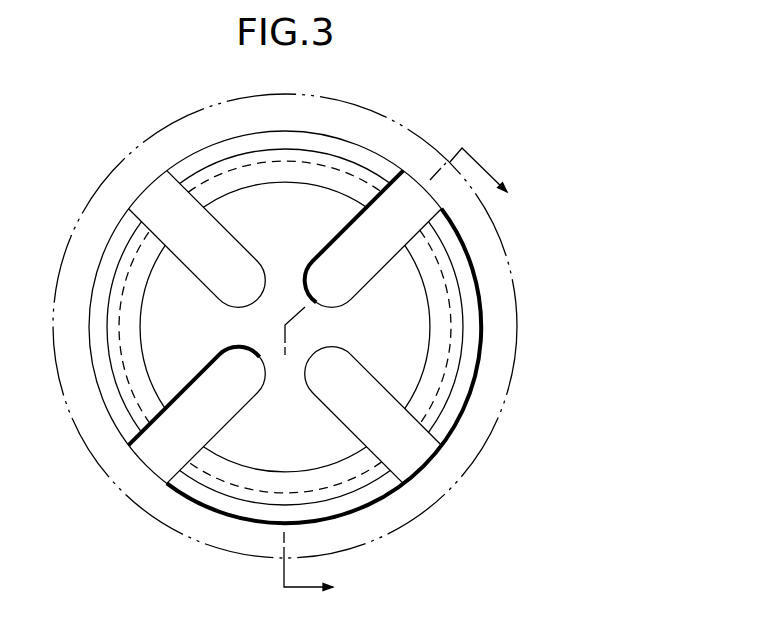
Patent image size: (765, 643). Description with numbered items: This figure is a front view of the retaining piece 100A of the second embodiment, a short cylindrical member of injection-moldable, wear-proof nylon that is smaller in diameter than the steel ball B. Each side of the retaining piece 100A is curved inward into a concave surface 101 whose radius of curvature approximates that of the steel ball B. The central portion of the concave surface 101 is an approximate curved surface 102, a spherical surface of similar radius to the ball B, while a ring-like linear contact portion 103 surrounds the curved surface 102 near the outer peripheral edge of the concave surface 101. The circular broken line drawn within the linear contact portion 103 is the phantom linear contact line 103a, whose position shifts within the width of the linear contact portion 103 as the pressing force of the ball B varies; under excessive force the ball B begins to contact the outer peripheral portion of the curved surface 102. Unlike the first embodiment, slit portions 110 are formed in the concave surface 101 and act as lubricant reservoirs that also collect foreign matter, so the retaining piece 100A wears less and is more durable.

The retaining piece 100A is at (190, 149).
The steel ball B is at (495, 220).
The concave surface 101 is at (384, 327).
The approximate curved surface 102 is at (408, 337).
The linear contact portion 103 is at (464, 308).
The phantom linear contact line 103a is at (442, 272).
The slit portion 110 is at (422, 457).